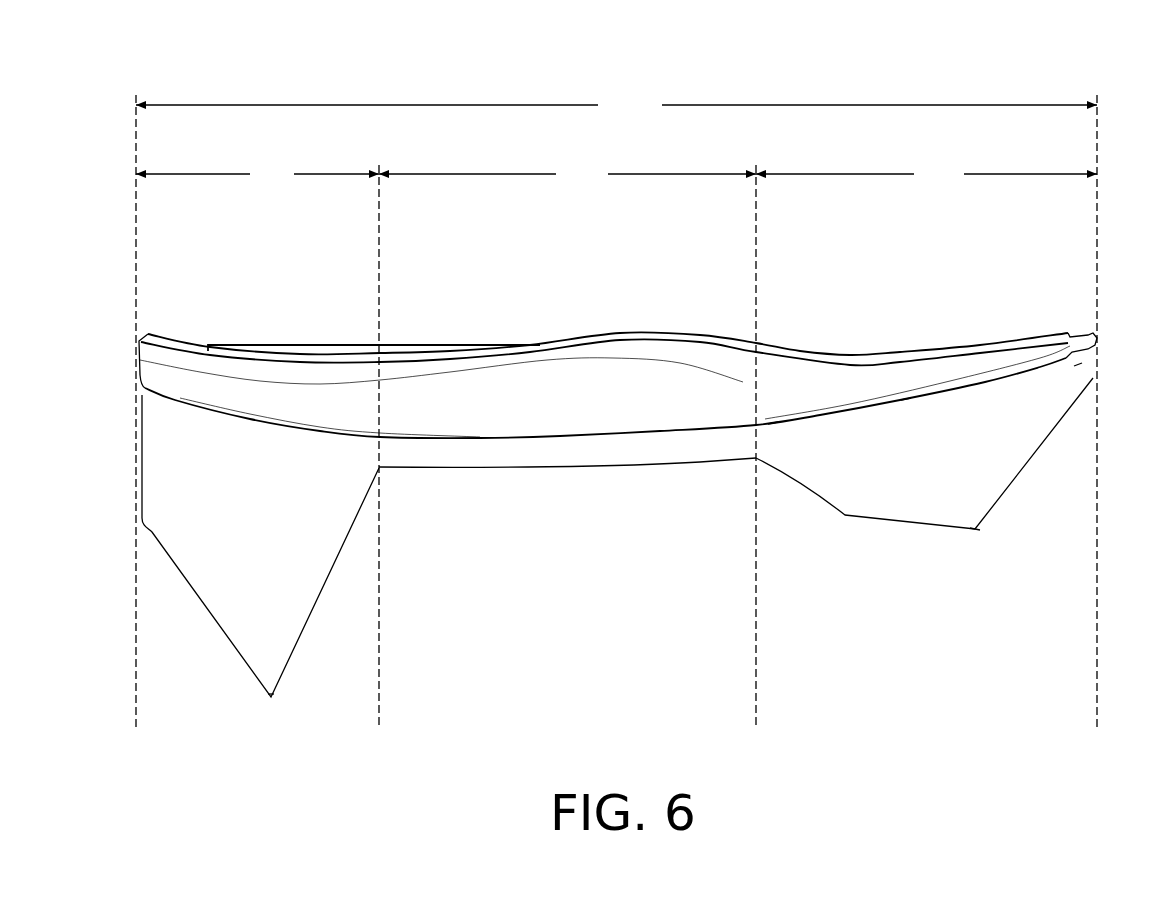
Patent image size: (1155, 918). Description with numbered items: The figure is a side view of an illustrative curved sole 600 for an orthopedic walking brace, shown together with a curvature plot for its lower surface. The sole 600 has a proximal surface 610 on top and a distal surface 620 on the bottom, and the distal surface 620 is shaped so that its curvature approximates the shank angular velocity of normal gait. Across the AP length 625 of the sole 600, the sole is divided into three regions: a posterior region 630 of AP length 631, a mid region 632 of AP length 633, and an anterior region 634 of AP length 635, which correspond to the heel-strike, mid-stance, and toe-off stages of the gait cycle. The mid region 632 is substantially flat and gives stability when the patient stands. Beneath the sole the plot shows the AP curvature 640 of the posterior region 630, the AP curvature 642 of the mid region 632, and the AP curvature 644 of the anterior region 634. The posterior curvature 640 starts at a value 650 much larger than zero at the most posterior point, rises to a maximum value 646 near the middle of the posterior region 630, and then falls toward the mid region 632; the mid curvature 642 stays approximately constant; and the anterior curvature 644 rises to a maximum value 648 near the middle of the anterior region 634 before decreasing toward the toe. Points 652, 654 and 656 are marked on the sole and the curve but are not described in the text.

The curved sole 600 is at (640, 34).
The proximal surface 610 is at (988, 346).
The distal surface 620 is at (985, 384).
The AP length of the sole 625 is at (616, 105).
The posterior region 630 is at (262, 278).
The AP length of the posterior region 631 is at (257, 174).
The mid region 632 is at (572, 278).
The AP length of the mid region 633 is at (567, 174).
The anterior region 634 is at (893, 278).
The AP length of the anterior region 635 is at (926, 174).
The AP curvature of the posterior region 640 is at (295, 662).
The AP curvature of the mid region 642 is at (570, 468).
The AP curvature of the anterior region 644 is at (838, 516).
The maximum value of the posterior region curvature 646 is at (273, 702).
The maximum value of the anterior region curvature 648 is at (973, 533).
The curvature value at the most posterior point 650 is at (130, 505).
The transition point 652 is at (774, 434).
The curved surface 654 is at (906, 422).
The toe tip 656 is at (1081, 368).